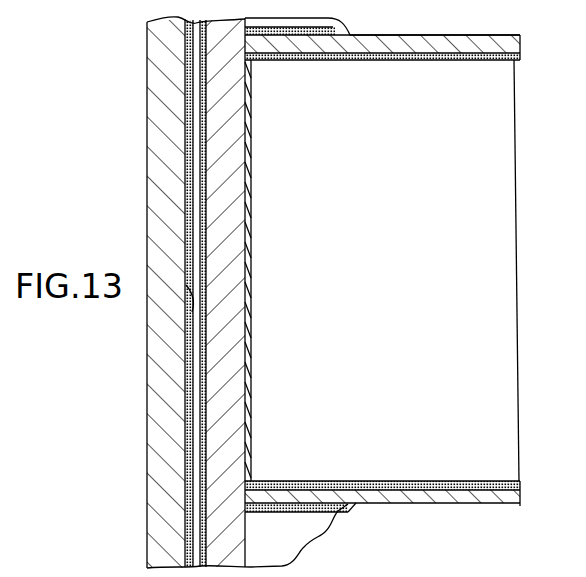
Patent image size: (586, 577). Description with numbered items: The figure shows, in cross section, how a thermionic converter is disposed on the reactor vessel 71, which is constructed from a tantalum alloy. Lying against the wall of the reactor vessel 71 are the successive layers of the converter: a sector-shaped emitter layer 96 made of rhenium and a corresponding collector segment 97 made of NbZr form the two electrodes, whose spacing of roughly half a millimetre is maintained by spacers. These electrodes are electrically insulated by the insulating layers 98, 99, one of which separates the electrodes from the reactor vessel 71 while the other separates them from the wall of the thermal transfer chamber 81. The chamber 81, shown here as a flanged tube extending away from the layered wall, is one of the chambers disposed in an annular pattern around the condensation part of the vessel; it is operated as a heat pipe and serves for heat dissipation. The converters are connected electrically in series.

The reactor vessel 71 is at (158, 527).
The insulating layer 99 is at (186, 409).
The emitter layer 96 is at (187, 471).
The collector segment 97 is at (198, 381).
The insulating layer 98 is at (204, 356).
The chamber 81 is at (363, 446).